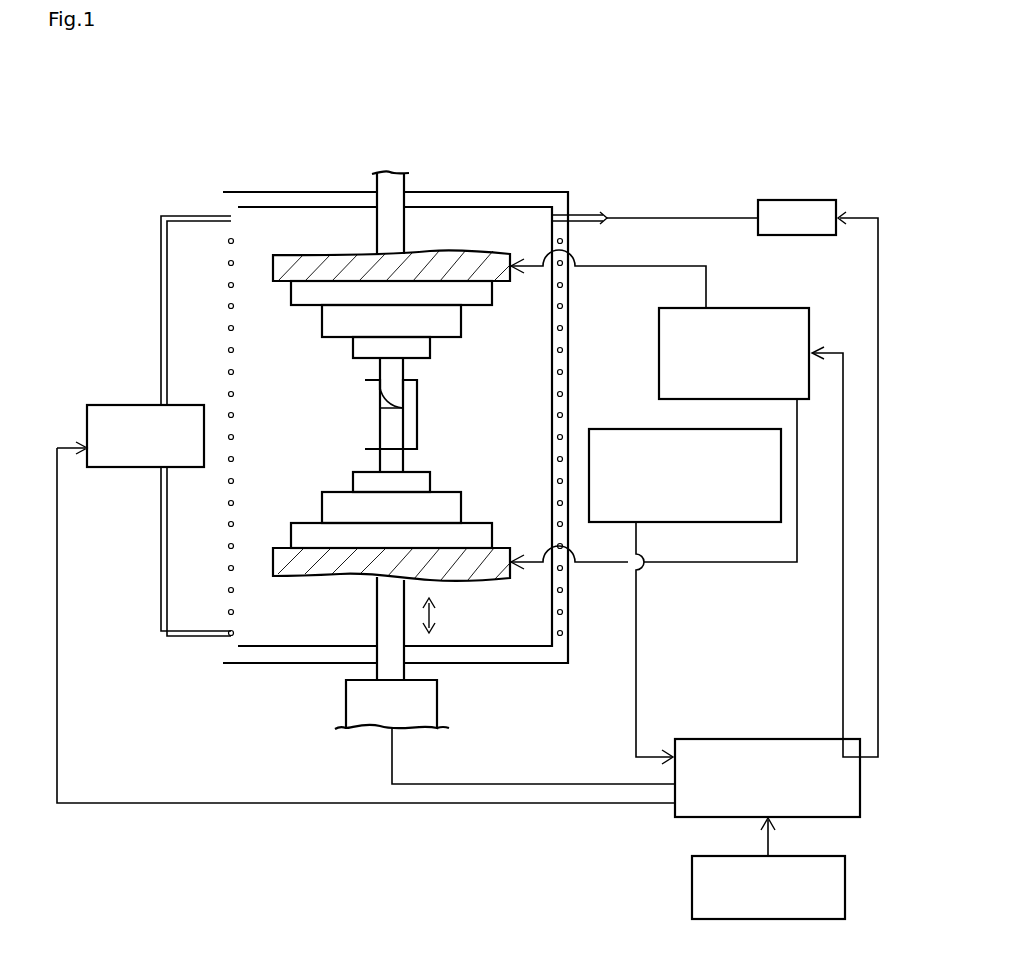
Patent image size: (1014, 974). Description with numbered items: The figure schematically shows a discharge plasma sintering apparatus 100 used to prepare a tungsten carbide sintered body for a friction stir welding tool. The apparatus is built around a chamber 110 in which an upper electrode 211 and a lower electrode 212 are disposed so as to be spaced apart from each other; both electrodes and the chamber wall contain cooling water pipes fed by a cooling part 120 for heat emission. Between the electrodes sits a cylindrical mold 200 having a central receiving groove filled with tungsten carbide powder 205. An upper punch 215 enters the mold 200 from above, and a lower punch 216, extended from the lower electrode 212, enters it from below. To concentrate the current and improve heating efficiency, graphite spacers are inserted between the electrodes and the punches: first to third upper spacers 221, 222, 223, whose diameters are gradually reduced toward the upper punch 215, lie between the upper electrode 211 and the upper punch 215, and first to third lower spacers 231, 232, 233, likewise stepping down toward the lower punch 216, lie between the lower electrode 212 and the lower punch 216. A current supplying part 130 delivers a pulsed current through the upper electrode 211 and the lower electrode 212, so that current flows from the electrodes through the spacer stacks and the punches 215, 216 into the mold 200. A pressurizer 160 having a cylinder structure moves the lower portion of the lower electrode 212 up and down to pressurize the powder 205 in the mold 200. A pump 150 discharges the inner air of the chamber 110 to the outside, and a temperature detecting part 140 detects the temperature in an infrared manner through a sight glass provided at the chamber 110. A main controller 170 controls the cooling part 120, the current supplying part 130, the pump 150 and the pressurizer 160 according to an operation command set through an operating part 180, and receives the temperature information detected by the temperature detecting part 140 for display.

The discharge plasma sintering apparatus 100 is at (170, 157).
The chamber 110 is at (252, 663).
The cooling part 120 is at (128, 404).
The current supplying part 130 is at (760, 308).
The temperature detecting part 140 is at (622, 429).
The pump 150 is at (800, 200).
The pressurizer 160 is at (437, 696).
The main controller 170 is at (758, 738).
The operating part 180 is at (692, 878).
The mold 200 is at (418, 424).
The tungsten carbide powder 205 is at (403, 396).
The upper electrode 211 is at (272, 252).
The lower electrode 212 is at (287, 577).
The upper punch 215 is at (400, 370).
The lower punch 216 is at (405, 458).
The first upper spacer 221 is at (291, 302).
The second upper spacer 222 is at (322, 322).
The third upper spacer 223 is at (353, 350).
The first lower spacer 231 is at (291, 536).
The second lower spacer 232 is at (322, 508).
The third lower spacer 233 is at (353, 478).